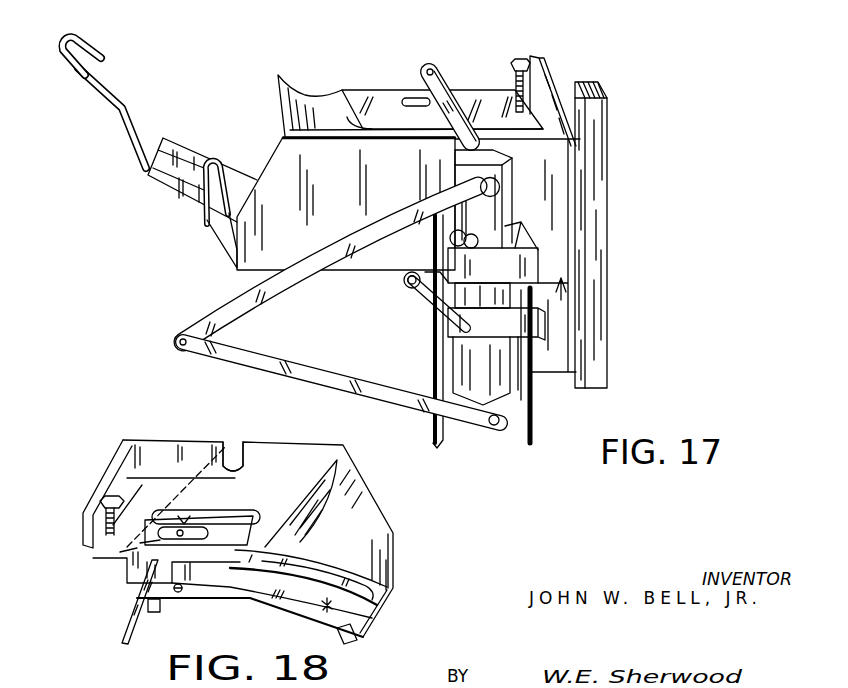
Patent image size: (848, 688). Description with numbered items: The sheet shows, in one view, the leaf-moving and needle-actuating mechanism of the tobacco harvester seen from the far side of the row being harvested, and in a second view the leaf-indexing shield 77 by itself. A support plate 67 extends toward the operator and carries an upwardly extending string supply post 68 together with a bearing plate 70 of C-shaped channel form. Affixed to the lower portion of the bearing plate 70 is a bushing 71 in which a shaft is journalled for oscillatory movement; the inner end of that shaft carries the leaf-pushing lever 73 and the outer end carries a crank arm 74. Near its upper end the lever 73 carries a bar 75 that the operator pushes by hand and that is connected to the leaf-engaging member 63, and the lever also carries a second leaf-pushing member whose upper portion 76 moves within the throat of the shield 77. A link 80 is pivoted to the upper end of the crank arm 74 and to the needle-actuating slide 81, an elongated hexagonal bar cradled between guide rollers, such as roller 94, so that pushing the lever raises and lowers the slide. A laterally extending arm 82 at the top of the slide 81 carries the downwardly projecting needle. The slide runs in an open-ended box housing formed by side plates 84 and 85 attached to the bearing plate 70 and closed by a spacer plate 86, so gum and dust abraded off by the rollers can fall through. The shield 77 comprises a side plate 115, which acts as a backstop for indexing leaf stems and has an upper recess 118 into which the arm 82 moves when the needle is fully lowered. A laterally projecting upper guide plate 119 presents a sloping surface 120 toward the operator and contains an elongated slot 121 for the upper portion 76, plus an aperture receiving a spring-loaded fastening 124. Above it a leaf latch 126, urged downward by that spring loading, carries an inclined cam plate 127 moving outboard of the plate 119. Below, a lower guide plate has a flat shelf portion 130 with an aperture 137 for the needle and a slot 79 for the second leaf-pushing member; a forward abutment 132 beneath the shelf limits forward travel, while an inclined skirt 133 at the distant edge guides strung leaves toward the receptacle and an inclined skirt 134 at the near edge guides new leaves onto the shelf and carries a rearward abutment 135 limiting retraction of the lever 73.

In FIG. 17, the leaf-engaging member 63 is at (86, 38).
In FIG. 17, the bar 75 is at (137, 148).
In FIG. 17, the leaf-pushing lever 73 is at (193, 153).
In FIG. 17, the upper portion of second leaf-pushing member 76 is at (212, 222).
In FIG. 17, the side plate 115 is at (404, 167).
In FIG. 18, the side plate 115 is at (350, 480).
In FIG. 17, the upper guide plate 119 is at (330, 96).
In FIG. 18, the upper guide plate 119 is at (262, 493).
In FIG. 17, the leaf latch 126 is at (388, 98).
In FIG. 18, the leaf latch 126 is at (140, 543).
In FIG. 17, the laterally extending arm 82 is at (443, 80).
In FIG. 17, the fastening 124 is at (516, 60).
In FIG. 18, the fastening 124 is at (110, 494).
In FIG. 17, the string supply post 68 is at (602, 110).
In FIG. 17, the needle-actuating slide 81 is at (508, 186).
In FIG. 17, the side plate 84 is at (530, 245).
In FIG. 17, the roller 94 is at (528, 291).
In FIG. 17, the spacer plate 86 is at (530, 328).
In FIG. 17, the support plate 67 is at (542, 367).
In FIG. 17, the bearing plate 70 is at (433, 353).
In FIG. 17, the side plate 85 is at (440, 272).
In FIG. 17, the bushing 71 is at (418, 300).
In FIG. 17, the link 80 is at (317, 278).
In FIG. 17, the crank arm 74 is at (337, 387).
In FIG. 18, the recess 118 is at (231, 455).
In FIG. 18, the elongated slot 121 is at (207, 516).
In FIG. 18, the sloping surface 120 is at (312, 510).
In FIG. 18, the leaf-indexing shield 77 is at (413, 548).
In FIG. 18, the slot 79 is at (290, 573).
In FIG. 18, the cam plate 127 is at (197, 560).
In FIG. 18, the aperture 137 is at (179, 592).
In FIG. 18, the shelf portion 130 is at (220, 590).
In FIG. 18, the inclined skirt 134 is at (320, 607).
In FIG. 18, the forward abutment 132 is at (154, 608).
In FIG. 18, the inclined skirt 133 is at (127, 630).
In FIG. 18, the rearward abutment 135 is at (350, 634).